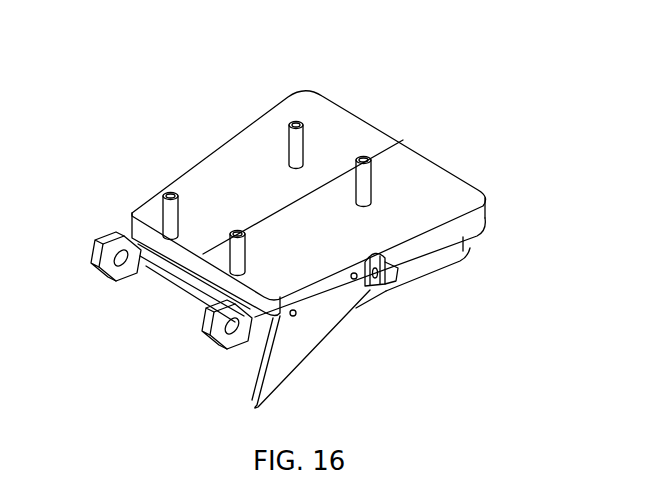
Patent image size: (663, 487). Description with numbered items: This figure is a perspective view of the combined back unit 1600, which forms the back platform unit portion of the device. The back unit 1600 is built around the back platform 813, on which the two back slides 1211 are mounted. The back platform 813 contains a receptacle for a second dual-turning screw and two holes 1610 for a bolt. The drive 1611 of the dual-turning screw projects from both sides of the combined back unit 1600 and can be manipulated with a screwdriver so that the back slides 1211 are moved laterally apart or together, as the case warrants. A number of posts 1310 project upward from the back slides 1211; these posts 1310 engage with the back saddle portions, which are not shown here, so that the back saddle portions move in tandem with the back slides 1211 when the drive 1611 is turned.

The back unit 1600 is at (122, 165).
The back slides 1211 is at (277, 247).
The posts 1310 is at (303, 142).
The back platform 813 is at (438, 250).
The drive 1611 is at (377, 274).
The holes 1610 is at (228, 340).